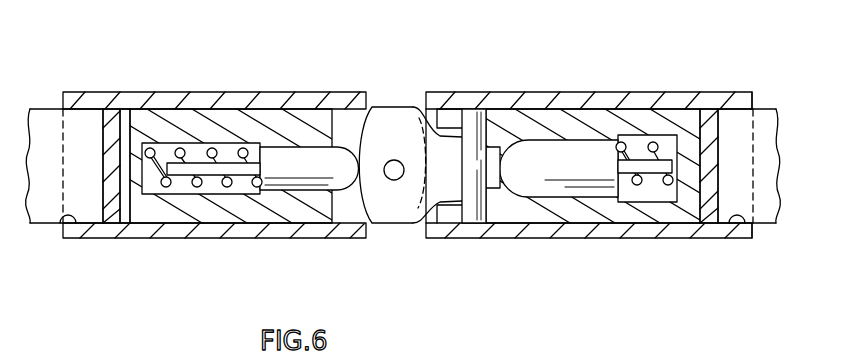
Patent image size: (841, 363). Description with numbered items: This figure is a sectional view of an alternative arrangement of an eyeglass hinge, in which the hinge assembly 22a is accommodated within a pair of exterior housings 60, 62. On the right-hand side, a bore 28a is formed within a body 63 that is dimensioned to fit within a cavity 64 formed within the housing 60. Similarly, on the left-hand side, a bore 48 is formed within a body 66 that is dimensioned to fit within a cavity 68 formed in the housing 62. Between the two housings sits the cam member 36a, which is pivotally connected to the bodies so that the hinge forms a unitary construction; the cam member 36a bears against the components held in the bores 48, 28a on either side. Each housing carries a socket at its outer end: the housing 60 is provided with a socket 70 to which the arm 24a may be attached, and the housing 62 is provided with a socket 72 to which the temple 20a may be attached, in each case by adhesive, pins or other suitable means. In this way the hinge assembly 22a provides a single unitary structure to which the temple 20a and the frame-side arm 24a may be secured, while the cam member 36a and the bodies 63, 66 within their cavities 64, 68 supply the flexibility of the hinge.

The temple 20a is at (51, 119).
The arm 24a is at (757, 112).
The hinge assembly 22a is at (403, 242).
The cam member 36a is at (387, 115).
The bore 48 is at (210, 197).
The bore 28a is at (629, 201).
The exterior housing 60 is at (667, 238).
The exterior housing 62 is at (113, 236).
The body 63 is at (637, 118).
The cavity 64 is at (538, 110).
The body 66 is at (215, 121).
The cavity 68 is at (163, 110).
The socket 70 is at (737, 224).
The socket 72 is at (63, 218).